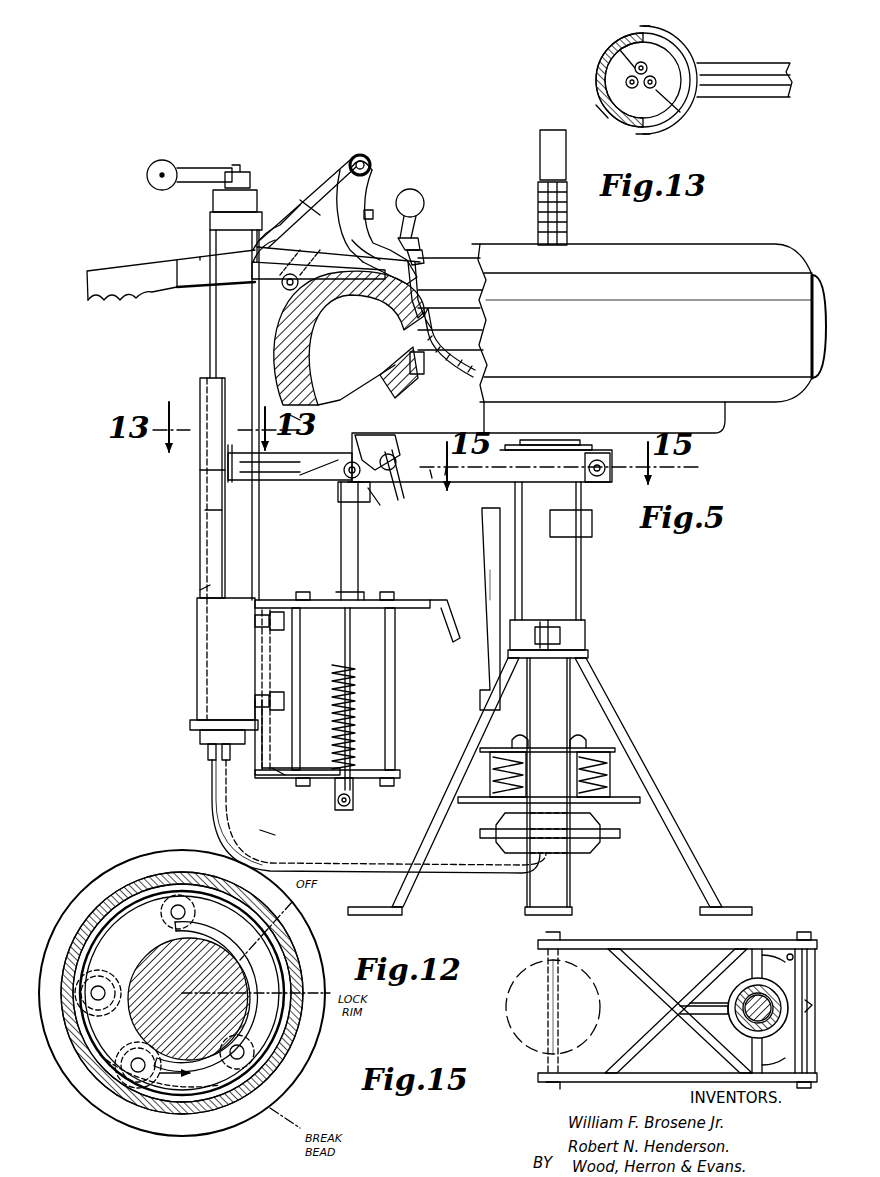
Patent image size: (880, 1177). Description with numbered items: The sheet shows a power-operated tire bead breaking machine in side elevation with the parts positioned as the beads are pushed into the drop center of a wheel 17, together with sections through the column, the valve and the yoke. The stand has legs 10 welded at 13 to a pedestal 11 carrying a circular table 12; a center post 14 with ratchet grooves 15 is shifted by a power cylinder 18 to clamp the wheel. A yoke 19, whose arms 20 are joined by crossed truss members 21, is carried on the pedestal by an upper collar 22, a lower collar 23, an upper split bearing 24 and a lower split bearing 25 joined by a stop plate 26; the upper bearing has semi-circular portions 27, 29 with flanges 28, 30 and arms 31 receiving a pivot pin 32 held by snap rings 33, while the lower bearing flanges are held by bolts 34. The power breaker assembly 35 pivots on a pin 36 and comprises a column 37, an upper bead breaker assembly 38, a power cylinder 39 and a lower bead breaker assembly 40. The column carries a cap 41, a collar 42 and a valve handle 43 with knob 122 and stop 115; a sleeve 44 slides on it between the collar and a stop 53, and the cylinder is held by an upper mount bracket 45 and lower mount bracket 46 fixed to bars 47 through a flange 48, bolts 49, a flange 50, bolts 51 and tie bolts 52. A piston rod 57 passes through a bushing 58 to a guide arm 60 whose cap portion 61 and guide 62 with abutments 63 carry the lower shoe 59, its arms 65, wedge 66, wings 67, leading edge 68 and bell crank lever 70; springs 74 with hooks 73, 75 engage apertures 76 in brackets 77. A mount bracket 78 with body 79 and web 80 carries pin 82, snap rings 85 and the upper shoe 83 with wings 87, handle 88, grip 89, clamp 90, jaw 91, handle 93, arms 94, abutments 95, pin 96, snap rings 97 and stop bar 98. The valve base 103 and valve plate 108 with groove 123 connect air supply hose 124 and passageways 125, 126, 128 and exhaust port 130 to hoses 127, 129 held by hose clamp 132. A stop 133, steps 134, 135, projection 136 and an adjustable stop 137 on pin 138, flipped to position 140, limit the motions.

In FIG. 5, the legs 10 is at (660, 810).
In FIG. 5, the pedestal 11 is at (570, 578).
In FIG. 15, the pedestal 11 is at (740, 997).
In FIG. 5, the circular table 12 is at (735, 418).
In FIG. 5, the welds 13 is at (572, 672).
In FIG. 5, the center post 14 is at (566, 150).
In FIG. 5, the circular ratchet grooves 15 is at (567, 215).
In FIG. 5, the wheel 17 is at (435, 283).
In FIG. 5, the power cylinder 18 is at (590, 852).
In FIG. 5, the yoke 19 is at (468, 470).
In FIG. 5, the yoke arms 20 is at (478, 480).
In FIG. 15, the yoke arms 20 is at (600, 1093).
In FIG. 15, the crossed truss members 21 is at (645, 975).
In FIG. 5, the upper collar 22 is at (600, 445).
In FIG. 5, the lower collar 23 is at (592, 655).
In FIG. 5, the upper split bearing 24 is at (605, 468).
In FIG. 5, the lower split bearing 25 is at (590, 633).
In FIG. 5, the stop plate 26 is at (505, 568).
In FIG. 15, the stop plate 26 is at (700, 1028).
In FIG. 15, the semi-circular portion 27 is at (736, 1035).
In FIG. 15, the radial flanges 28 is at (752, 1055).
In FIG. 15, the semi-circular portion 29 is at (782, 962).
In FIG. 15, the flanges 30 is at (790, 1065).
In FIG. 15, the arms 31 is at (810, 1045).
In FIG. 5, the pivot pin 32 is at (603, 480).
In FIG. 15, the pivot pin 32 is at (808, 1010).
In FIG. 5, the snap rings 33 is at (610, 460).
In FIG. 15, the snap rings 33 is at (812, 932).
In FIG. 5, the bolts 34 is at (540, 627).
In FIG. 5, the power breaker assembly 35 is at (217, 577).
In FIG. 5, the pivot pin 36 is at (344, 478).
In FIG. 15, the pivot pin 36 is at (545, 1015).
In FIG. 5, the column 37 is at (212, 350).
In FIG. 13, the column 37 is at (597, 62).
In FIG. 5, the upper bead breaker assembly 38 is at (343, 182).
In FIG. 5, the power cylinder 39 is at (370, 690).
In FIG. 15, the power cylinder 39 is at (507, 1005).
In FIG. 5, the lower bead breaker assembly 40 is at (338, 465).
In FIG. 5, the cap 41 is at (212, 222).
In FIG. 5, the collar 42 is at (190, 722).
In FIG. 5, the handle 43 is at (192, 168).
In FIG. 5, the cylindrical sleeve 44 is at (197, 630).
In FIG. 5, the upper mount bracket 45 is at (280, 600).
In FIG. 5, the lower mount bracket 46 is at (275, 778).
In FIG. 5, the bars 47 is at (262, 668).
In FIG. 5, the depending flange 48 is at (280, 630).
In FIG. 5, the bolts 49 is at (255, 620).
In FIG. 5, the flange 50 is at (270, 735).
In FIG. 5, the bolts 51 is at (278, 690).
In FIG. 5, the tie bolts 52 is at (385, 632).
In FIG. 5, the stop 53 is at (205, 512).
In FIG. 13, the stop 53 is at (596, 107).
In FIG. 5, the piston rod 57 is at (358, 557).
In FIG. 5, the bushing 58 is at (364, 598).
In FIG. 5, the lower bead breaking shoe 59 is at (382, 370).
In FIG. 5, the guide arm 60 is at (300, 455).
In FIG. 13, the guide arm 60 is at (772, 100).
In FIG. 5, the inverted cap portion 61 is at (345, 492).
In FIG. 5, the column engaging guide 62 is at (236, 445).
In FIG. 13, the column engaging guide 62 is at (695, 45).
In FIG. 5, the abutments 63 is at (200, 470).
In FIG. 13, the abutments 63 is at (635, 133).
In FIG. 5, the arms 65 is at (300, 410).
In FIG. 5, the wedge portion 66 is at (408, 345).
In FIG. 5, the wing portions 67 is at (425, 380).
In FIG. 5, the leading edge 68 is at (432, 360).
In FIG. 5, the bell crank lever 70 is at (372, 503).
In FIG. 5, the hooks 73 is at (340, 502).
In FIG. 5, the coil springs 74 is at (355, 728).
In FIG. 5, the hooks 75 is at (353, 790).
In FIG. 5, the apertures 76 is at (350, 805).
In FIG. 5, the brackets 77 is at (344, 810).
In FIG. 5, the mount bracket 78 is at (262, 250).
In FIG. 5, the main body 79 is at (288, 220).
In FIG. 5, the web 80 is at (300, 200).
In FIG. 5, the pivot pin 82 is at (368, 155).
In FIG. 5, the upper bead breaking shoe 83 is at (366, 195).
In FIG. 5, the snap rings 85 is at (370, 160).
In FIG. 5, the wing portions 87 is at (374, 290).
In FIG. 5, the handle 88 is at (205, 270).
In FIG. 5, the grip 89 is at (122, 278).
In FIG. 5, the clamp 90 is at (410, 243).
In FIG. 5, the jaw 91 is at (430, 256).
In FIG. 5, the handle 93 is at (416, 196).
In FIG. 5, the arms 94 is at (320, 210).
In FIG. 5, the abutment 95 is at (312, 258).
In FIG. 5, the pivot pin 96 is at (284, 290).
In FIG. 5, the snap rings 97 is at (252, 298).
In FIG. 5, the stop bar 98 is at (374, 214).
In FIG. 12, the base 103 is at (98, 1052).
In FIG. 12, the valve plate 108 is at (160, 960).
In FIG. 5, the stop 115 is at (235, 165).
In FIG. 5, the knob 122 is at (148, 168).
In FIG. 12, the arcuate groove 123 is at (252, 948).
In FIG. 5, the air supply hose 124 is at (212, 782).
In FIG. 13, the air supply hose 124 is at (620, 48).
In FIG. 12, the inlet passageway 125 is at (245, 1052).
In FIG. 12, the passageway 126 is at (135, 1072).
In FIG. 5, the connector hose 127 is at (480, 880).
In FIG. 13, the connector hose 127 is at (690, 118).
In FIG. 12, the passageway 128 is at (102, 985).
In FIG. 5, the hose 129 is at (272, 835).
In FIG. 13, the hose 129 is at (626, 82).
In FIG. 12, the exhaust port 130 is at (172, 872).
In FIG. 5, the hose clamp 132 is at (208, 750).
In FIG. 5, the stop 133 is at (592, 527).
In FIG. 5, the step 134 is at (497, 516).
In FIG. 5, the second step 135 is at (490, 590).
In FIG. 5, the projection 136 is at (445, 640).
In FIG. 5, the adjustable stop 137 is at (378, 445).
In FIG. 5, the pin 138 is at (395, 485).
In FIG. 5, the inoperative position 140 is at (445, 433).